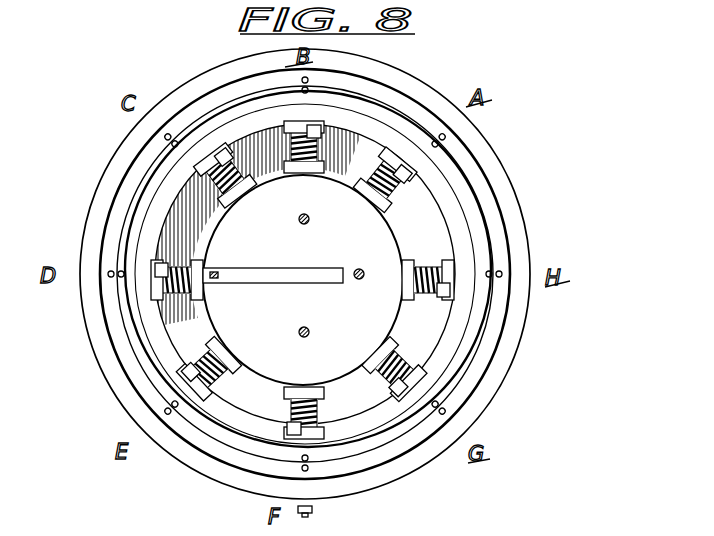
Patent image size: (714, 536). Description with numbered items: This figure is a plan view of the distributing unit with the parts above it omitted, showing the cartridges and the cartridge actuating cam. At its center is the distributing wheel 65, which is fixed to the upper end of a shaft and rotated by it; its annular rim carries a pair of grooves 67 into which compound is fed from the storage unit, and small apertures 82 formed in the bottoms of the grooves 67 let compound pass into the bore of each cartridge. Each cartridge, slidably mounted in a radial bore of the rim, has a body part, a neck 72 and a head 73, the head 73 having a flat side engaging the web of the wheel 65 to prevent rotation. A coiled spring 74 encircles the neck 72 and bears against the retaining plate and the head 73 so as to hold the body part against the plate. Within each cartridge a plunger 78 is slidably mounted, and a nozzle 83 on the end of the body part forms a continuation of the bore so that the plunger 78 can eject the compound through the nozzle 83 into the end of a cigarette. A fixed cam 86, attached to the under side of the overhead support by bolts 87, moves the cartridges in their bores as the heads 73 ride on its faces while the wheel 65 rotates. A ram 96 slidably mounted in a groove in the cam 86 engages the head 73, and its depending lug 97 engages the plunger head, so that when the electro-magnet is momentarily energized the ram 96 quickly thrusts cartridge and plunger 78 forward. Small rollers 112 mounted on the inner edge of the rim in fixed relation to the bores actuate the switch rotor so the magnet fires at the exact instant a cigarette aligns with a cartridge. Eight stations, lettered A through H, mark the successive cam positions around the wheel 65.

The neck 72 is at (265, 128).
The coiled spring 74 is at (192, 183).
The head 73 is at (160, 200).
The small rollers 112 is at (163, 242).
The depending lug 97 is at (213, 278).
The ram 96 is at (242, 277).
The distributing wheel 65 is at (93, 377).
The plunger 78 is at (307, 515).
The nozzle 83 is at (312, 510).
The small apertures 82 is at (437, 405).
The fixed cam 86 is at (378, 322).
The grooves 67 is at (482, 240).
The bolts 87 is at (306, 221).